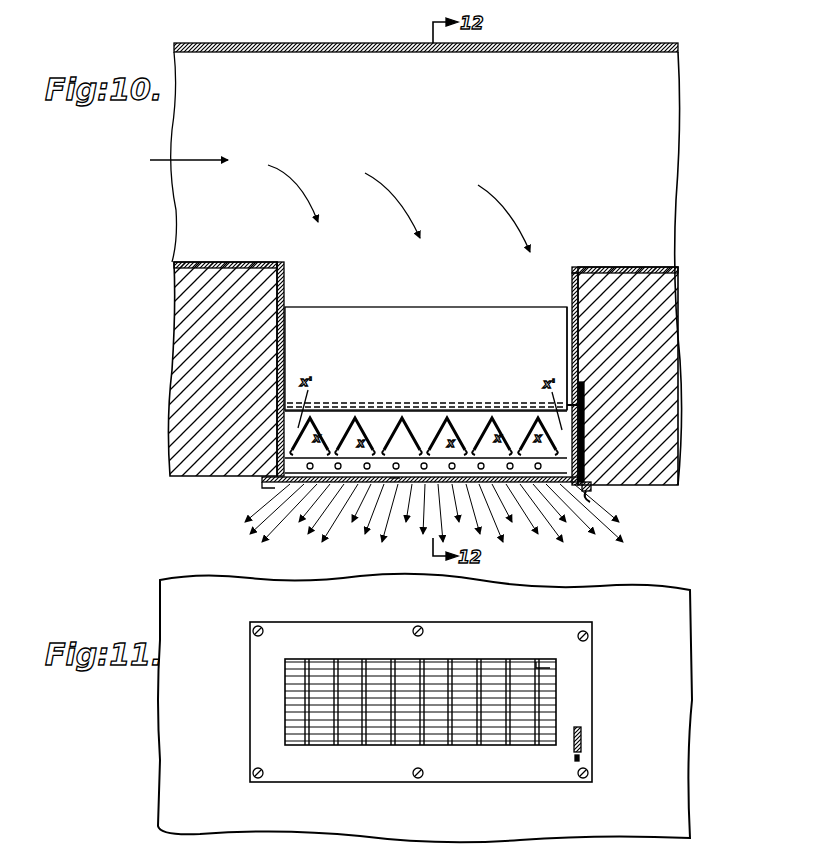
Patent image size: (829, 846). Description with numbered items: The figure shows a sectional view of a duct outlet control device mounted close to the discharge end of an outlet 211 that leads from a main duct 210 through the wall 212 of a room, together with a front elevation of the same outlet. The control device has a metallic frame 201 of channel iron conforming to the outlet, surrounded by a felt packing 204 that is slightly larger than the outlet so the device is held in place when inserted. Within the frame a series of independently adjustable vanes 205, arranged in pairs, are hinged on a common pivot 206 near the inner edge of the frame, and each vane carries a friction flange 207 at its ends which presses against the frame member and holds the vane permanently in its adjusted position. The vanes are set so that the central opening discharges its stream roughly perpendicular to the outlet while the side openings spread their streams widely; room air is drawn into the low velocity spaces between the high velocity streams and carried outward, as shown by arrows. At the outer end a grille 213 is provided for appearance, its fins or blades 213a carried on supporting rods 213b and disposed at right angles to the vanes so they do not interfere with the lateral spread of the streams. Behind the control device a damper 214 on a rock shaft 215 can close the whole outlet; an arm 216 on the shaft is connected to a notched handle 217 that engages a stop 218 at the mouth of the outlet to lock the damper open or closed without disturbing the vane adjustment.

In FIG. 10, the frame 201 is at (292, 413).
In FIG. 10, the packing 204 is at (292, 432).
In FIG. 10, the vanes 205 is at (432, 440).
In FIG. 10, the pivot 206 is at (465, 440).
In FIG. 10, the friction flange 207 is at (370, 428).
In FIG. 10, the main duct 210 is at (650, 188).
In FIG. 10, the outlet 211 is at (569, 333).
In FIG. 10, the wall 212 is at (655, 361).
In FIG. 11, the wall 212 is at (662, 752).
In FIG. 10, the grille 213 is at (272, 483).
In FIG. 11, the grille 213 is at (568, 697).
In FIG. 10, the fins or blades 213a is at (300, 481).
In FIG. 11, the fins or blades 213a is at (552, 668).
In FIG. 10, the supporting rods 213b is at (396, 481).
In FIG. 11, the supporting rods 213b is at (538, 662).
In FIG. 10, the damper 214 is at (506, 318).
In FIG. 10, the rock shaft 215 is at (576, 406).
In FIG. 10, the arm 216 is at (585, 392).
In FIG. 10, the handle 217 is at (590, 500).
In FIG. 11, the handle 217 is at (580, 758).
In FIG. 10, the stop 218 is at (592, 490).
In FIG. 11, the stop 218 is at (582, 737).